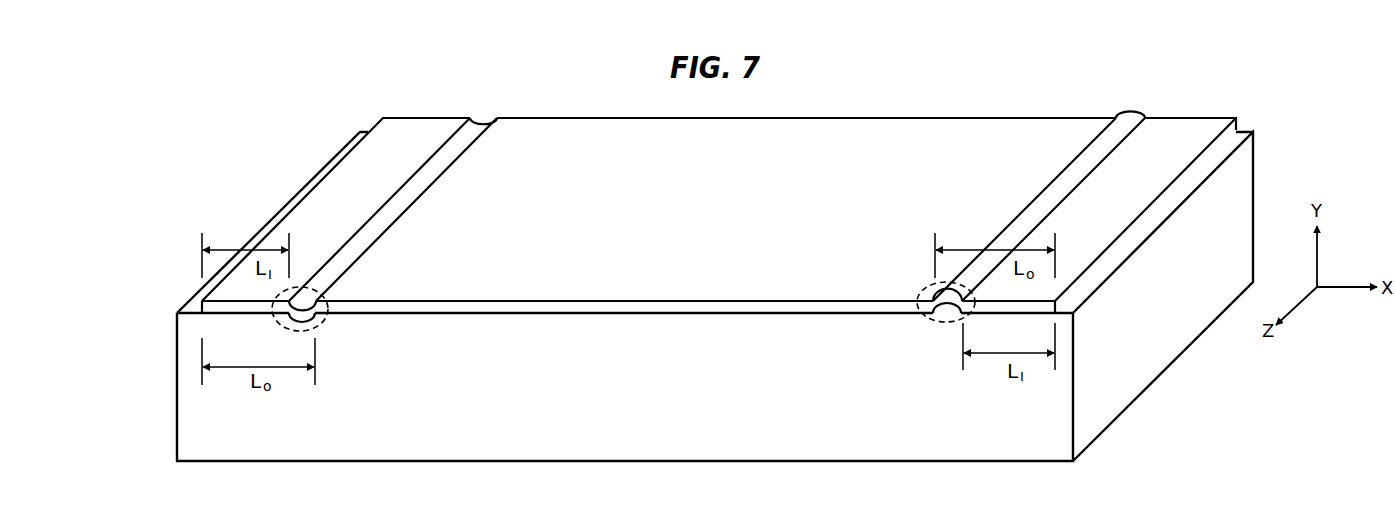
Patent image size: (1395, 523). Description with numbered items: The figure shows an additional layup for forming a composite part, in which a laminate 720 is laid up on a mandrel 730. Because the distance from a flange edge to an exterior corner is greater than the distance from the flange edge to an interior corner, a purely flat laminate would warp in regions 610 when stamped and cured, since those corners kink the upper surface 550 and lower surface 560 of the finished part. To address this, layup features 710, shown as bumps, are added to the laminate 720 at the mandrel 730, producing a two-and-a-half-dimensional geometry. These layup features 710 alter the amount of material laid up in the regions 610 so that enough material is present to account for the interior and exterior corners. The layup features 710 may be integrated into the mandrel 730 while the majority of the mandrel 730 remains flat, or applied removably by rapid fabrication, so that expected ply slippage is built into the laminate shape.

The upper surface 550 is at (608, 297).
The lower surface 560 is at (642, 316).
The regions 610 is at (330, 308).
The layup features 710 is at (298, 321).
The laminate 720 is at (693, 187).
The mandrel 730 is at (1127, 317).